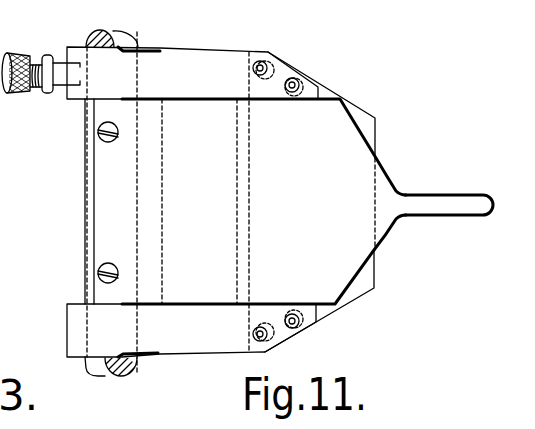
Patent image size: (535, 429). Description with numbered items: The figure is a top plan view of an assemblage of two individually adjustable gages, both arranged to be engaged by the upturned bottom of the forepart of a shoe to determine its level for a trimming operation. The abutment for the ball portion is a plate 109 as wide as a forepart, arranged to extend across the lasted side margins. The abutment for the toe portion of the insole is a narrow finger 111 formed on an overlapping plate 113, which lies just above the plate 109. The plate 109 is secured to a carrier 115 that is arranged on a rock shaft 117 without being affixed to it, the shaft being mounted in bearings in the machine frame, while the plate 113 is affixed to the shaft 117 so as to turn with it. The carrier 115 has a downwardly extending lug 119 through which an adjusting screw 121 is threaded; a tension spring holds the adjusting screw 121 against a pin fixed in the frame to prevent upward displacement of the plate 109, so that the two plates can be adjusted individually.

The plate 109 is at (366, 131).
The narrow finger 111 is at (440, 203).
The overlapping plate 113 is at (358, 171).
The carrier 115 is at (208, 63).
The rock shaft 117 is at (93, 365).
The downwardly extending lug 119 is at (60, 98).
The adjusting screw 121 is at (32, 95).